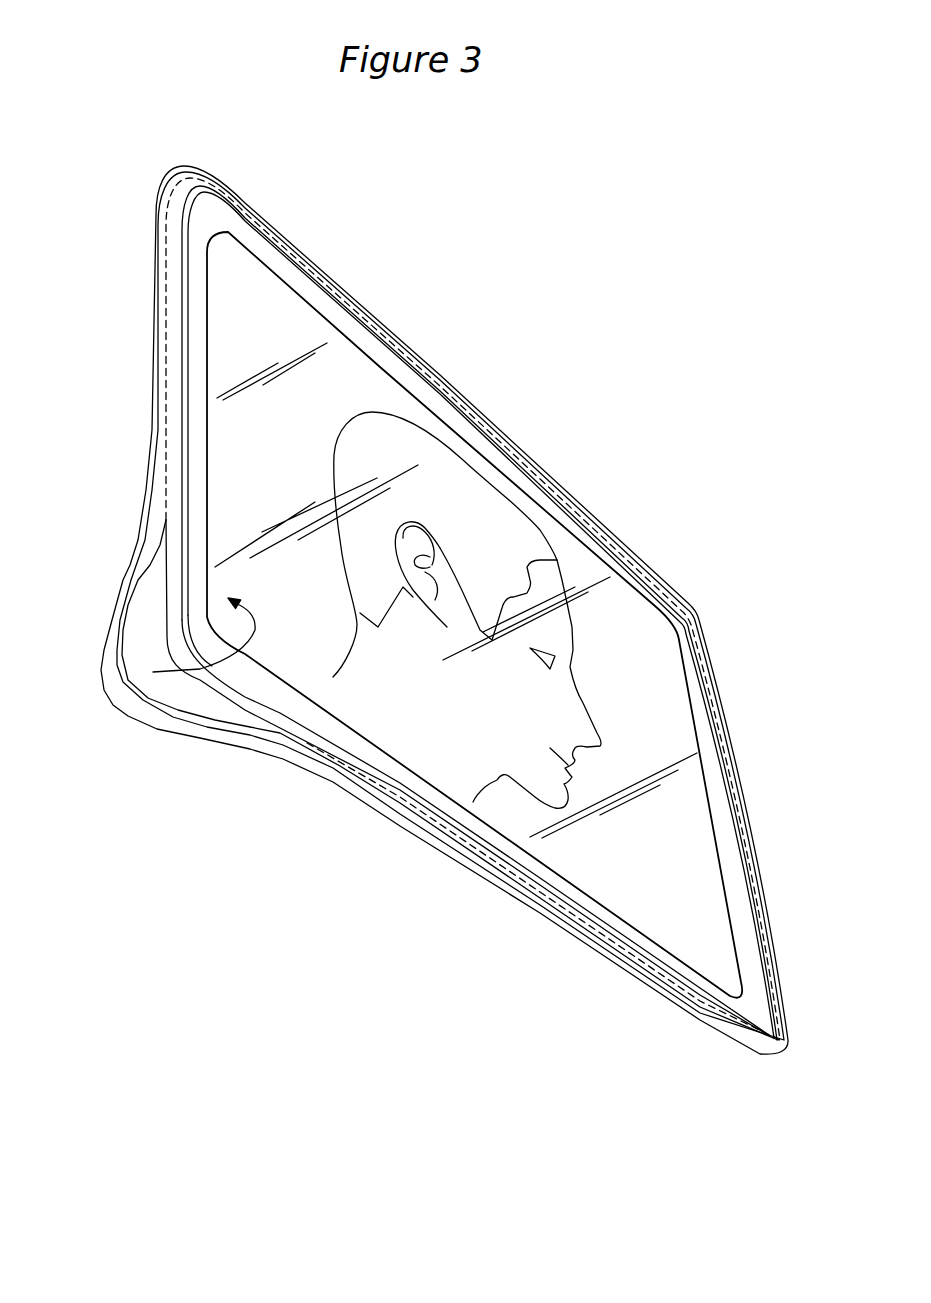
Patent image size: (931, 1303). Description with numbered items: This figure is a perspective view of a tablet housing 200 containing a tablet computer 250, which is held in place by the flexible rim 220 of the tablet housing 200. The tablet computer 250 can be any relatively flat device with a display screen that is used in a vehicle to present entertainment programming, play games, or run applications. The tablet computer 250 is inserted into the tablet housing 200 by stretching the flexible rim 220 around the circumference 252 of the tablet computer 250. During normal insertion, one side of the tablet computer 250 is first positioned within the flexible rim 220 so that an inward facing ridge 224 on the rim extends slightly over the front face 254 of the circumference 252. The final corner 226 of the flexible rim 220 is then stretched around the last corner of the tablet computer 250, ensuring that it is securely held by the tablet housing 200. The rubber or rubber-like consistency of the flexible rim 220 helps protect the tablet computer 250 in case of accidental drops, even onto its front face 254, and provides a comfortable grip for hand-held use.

The tablet housing 200 is at (763, 1047).
The flexible rim 220 is at (163, 297).
The inward facing ridge 224 is at (752, 828).
The final corner 226 is at (103, 658).
The tablet computer 250 is at (313, 296).
The circumference 252 is at (223, 687).
The front face 254 is at (647, 672).